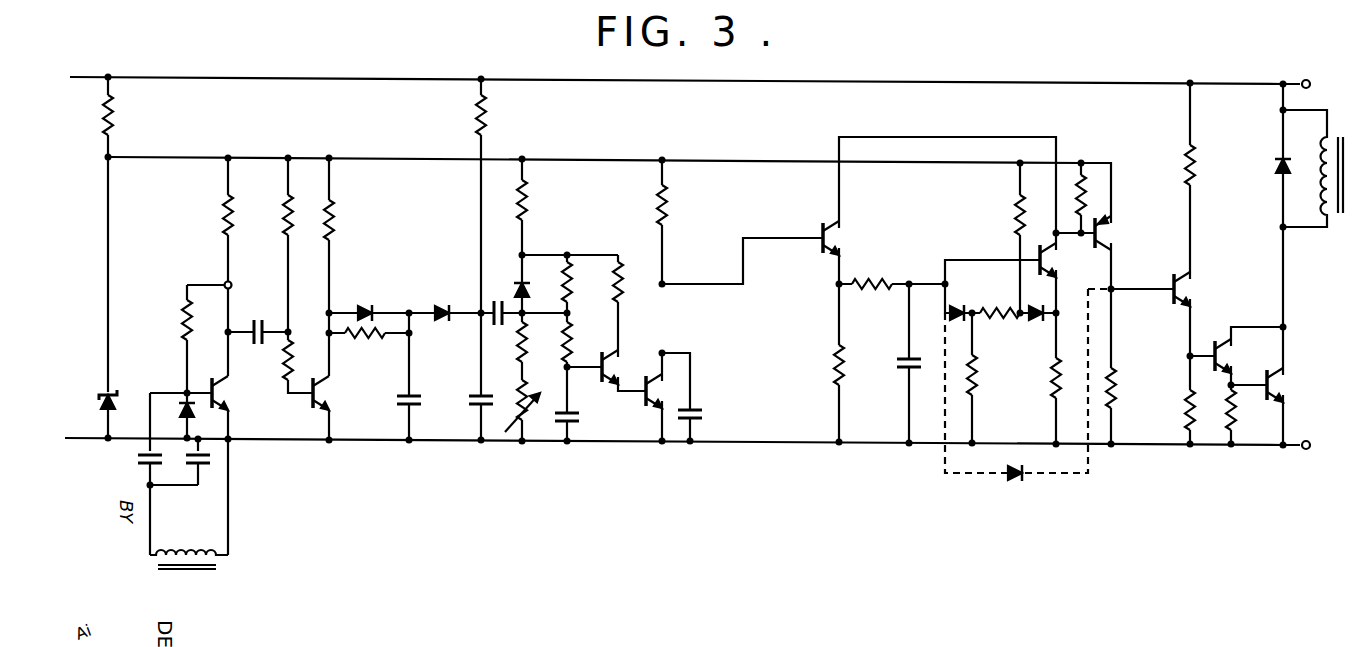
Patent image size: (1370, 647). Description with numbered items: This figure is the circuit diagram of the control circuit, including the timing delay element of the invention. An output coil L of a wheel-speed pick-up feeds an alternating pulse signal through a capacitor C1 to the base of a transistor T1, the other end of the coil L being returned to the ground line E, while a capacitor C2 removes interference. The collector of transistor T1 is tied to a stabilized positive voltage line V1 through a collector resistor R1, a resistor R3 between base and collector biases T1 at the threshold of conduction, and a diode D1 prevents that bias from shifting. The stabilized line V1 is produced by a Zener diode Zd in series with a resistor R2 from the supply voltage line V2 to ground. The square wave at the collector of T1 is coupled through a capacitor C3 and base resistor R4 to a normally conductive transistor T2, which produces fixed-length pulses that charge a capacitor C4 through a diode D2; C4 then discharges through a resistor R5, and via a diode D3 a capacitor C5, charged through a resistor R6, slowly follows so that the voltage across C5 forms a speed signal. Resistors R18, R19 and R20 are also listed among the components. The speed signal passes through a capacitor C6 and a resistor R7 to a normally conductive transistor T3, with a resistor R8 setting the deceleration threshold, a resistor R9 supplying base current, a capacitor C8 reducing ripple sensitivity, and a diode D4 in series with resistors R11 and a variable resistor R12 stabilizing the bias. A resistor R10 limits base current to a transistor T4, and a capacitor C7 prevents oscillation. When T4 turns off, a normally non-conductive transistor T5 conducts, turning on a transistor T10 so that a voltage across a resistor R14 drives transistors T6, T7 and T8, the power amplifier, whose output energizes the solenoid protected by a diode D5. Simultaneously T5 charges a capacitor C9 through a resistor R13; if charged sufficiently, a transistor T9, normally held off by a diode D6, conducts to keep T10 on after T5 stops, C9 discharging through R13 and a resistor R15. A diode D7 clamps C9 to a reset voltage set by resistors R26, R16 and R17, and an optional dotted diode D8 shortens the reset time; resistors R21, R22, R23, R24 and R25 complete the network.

The supply voltage line V2 is at (212, 77).
The stabilized positive voltage line V1 is at (212, 157).
The ground line E is at (288, 440).
The collector resistor R1 is at (208, 222).
The resistor R2 is at (125, 115).
The resistor R3 is at (170, 323).
The base resistor R4 is at (305, 360).
The resistor R5 is at (365, 347).
The resistor R6 is at (499, 115).
The resistor R7 is at (585, 342).
The resistor R8 is at (584, 282).
The resistor R9 is at (540, 202).
The resistor R10 is at (622, 280).
The resistor R11 is at (547, 342).
The variable resistor R12 is at (530, 434).
The resistor R13 is at (880, 270).
The resistor R14 is at (1136, 388).
The resistor R15 is at (819, 365).
The resistor R16 is at (999, 329).
The resistor R17 is at (1000, 215).
The resistor R18 is at (265, 222).
The resistor R19 is at (355, 225).
The resistor R20 is at (689, 205).
The resistor R21 is at (1083, 196).
The resistor R22 is at (1045, 378).
The resistor R23 is at (1216, 165).
The resistor R24 is at (1187, 415).
The resistor R25 is at (1237, 415).
The resistor R26 is at (998, 375).
The capacitor C1 is at (135, 464).
The capacitor C2 is at (214, 462).
The capacitor C3 is at (254, 320).
The capacitor C4 is at (421, 386).
The capacitor C5 is at (493, 386).
The capacitor C6 is at (494, 301).
The capacitor C7 is at (705, 410).
The capacitor C8 is at (583, 420).
The capacitor C9 is at (895, 350).
The diode D1 is at (178, 412).
The diode D2 is at (365, 300).
The diode D3 is at (445, 300).
The diode D4 is at (538, 281).
The diode D5 is at (1282, 168).
The diode D6 is at (1039, 301).
The diode D7 is at (967, 301).
The diode D8 is at (1017, 489).
The transistor T1 is at (232, 394).
The transistor T2 is at (333, 394).
The transistor T3 is at (623, 367).
The transistor T4 is at (665, 391).
The transistor T5 is at (845, 238).
The transistor T6 is at (1197, 289).
The transistor T7 is at (1234, 356).
The transistor T8 is at (1287, 385).
The transistor T9 is at (1061, 260).
The transistor T10 is at (1126, 233).
The Zener diode Zd is at (120, 387).
The output coil L is at (180, 572).